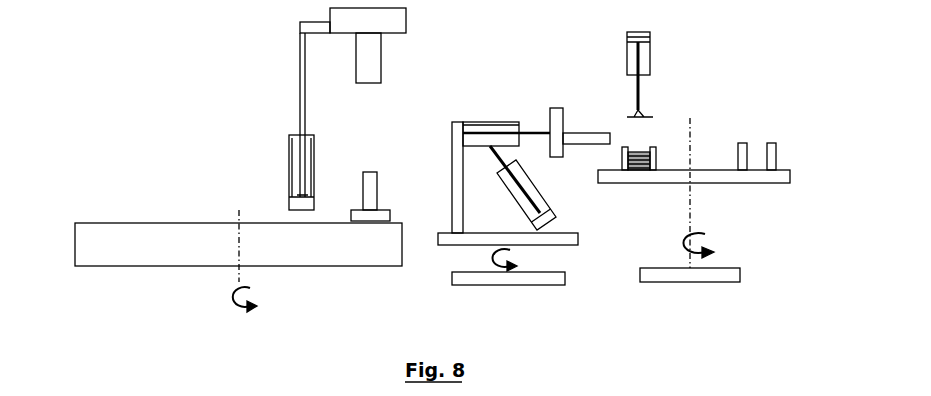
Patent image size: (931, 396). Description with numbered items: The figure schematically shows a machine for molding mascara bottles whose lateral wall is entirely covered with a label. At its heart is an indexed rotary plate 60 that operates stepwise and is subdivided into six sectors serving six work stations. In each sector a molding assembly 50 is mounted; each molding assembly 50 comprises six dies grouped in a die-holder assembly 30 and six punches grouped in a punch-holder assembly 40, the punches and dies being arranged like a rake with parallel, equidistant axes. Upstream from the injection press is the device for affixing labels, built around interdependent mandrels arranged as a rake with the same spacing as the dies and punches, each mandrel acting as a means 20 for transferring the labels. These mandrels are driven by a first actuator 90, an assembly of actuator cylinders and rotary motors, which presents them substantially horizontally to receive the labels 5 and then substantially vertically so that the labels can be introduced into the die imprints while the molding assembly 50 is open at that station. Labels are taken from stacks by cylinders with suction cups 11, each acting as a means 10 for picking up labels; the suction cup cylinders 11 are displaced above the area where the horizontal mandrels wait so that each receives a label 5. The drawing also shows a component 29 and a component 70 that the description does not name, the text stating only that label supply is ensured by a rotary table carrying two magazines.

The label 5 is at (653, 117).
The means for picking up labels 10 is at (663, 71).
The cylinder with suction cup 11 is at (641, 108).
The means for transferring labels 20 is at (524, 199).
The gripper arm 29 is at (595, 135).
The die-holder assembly 30 is at (388, 58).
The punch-holder assembly 40 is at (375, 195).
The molding assembly 50 is at (375, 109).
The indexed rotary plate 60 is at (267, 232).
The turntable carrier 70 is at (729, 112).
The first actuator 90 is at (513, 284).